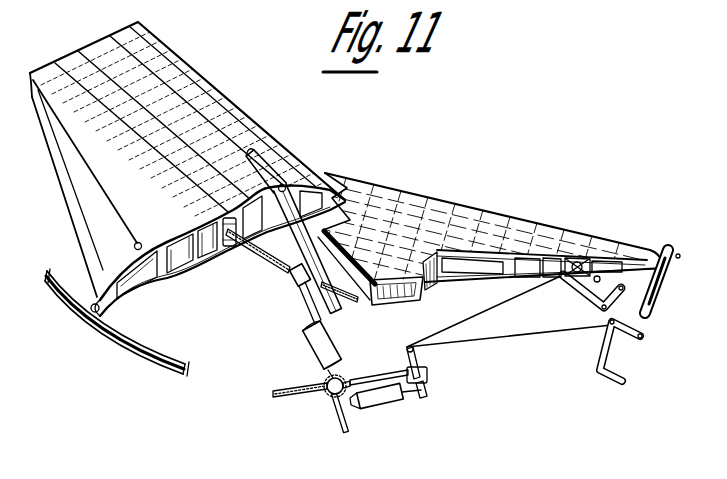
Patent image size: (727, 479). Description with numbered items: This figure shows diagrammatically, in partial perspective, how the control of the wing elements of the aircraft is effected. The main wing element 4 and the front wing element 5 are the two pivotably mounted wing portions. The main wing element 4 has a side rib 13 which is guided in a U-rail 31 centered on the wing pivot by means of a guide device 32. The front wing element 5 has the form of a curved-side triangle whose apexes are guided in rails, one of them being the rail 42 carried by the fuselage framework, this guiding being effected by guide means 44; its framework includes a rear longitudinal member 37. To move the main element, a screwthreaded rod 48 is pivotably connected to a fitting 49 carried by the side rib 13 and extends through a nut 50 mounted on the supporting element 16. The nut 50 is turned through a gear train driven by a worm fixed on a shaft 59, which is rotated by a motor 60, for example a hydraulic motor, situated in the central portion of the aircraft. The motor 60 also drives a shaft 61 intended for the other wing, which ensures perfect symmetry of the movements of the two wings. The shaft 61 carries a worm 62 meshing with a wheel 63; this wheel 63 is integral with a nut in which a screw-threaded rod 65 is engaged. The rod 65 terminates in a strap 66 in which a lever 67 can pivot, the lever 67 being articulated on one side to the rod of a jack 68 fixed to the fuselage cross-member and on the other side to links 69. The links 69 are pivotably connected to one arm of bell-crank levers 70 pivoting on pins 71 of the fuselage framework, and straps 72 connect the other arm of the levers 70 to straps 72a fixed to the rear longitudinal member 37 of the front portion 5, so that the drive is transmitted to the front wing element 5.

The main wing element 4 is at (180, 118).
The front wing element 5 is at (419, 200).
The side rib 13 is at (156, 275).
The supporting element 16 is at (352, 304).
The U-rail 31 is at (113, 339).
The guide device 32 is at (86, 320).
The rear longitudinal member 37 is at (508, 270).
The rail 42 is at (655, 301).
The guide means 44 is at (679, 254).
The screwthreaded rod 48 is at (277, 265).
The fitting 49 is at (229, 250).
The nut 50 is at (298, 285).
The shaft 59 is at (311, 317).
The motor 60 is at (320, 348).
The shaft 61 is at (338, 424).
The worm 62 is at (333, 400).
The wheel 63 is at (347, 403).
The screw-threaded rod 65 is at (371, 380).
The strap 66 is at (428, 369).
The lever 67 is at (426, 387).
The jack 68 is at (384, 402).
The links 69 is at (497, 326).
The bell-crank levers 70 is at (600, 350).
The pins 71 is at (608, 322).
The straps 72 is at (598, 277).
The straps 72a is at (574, 262).